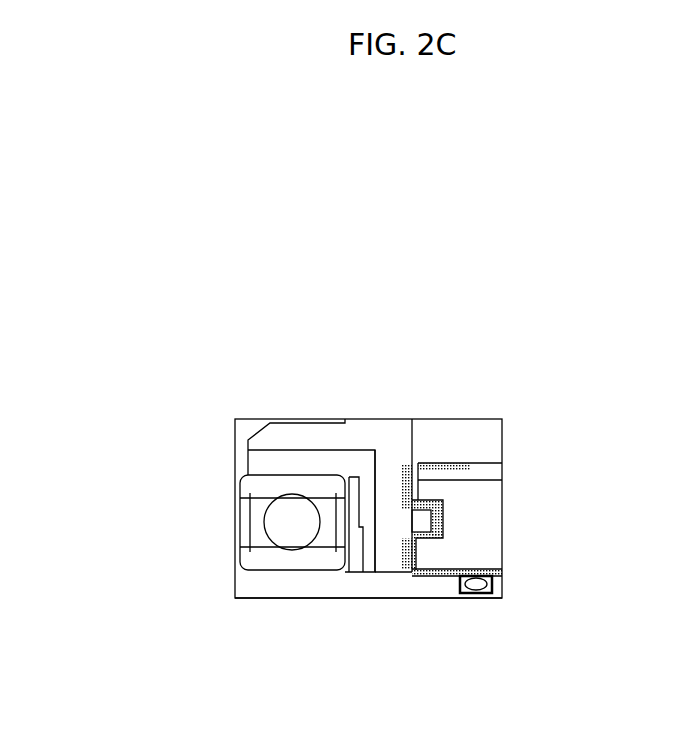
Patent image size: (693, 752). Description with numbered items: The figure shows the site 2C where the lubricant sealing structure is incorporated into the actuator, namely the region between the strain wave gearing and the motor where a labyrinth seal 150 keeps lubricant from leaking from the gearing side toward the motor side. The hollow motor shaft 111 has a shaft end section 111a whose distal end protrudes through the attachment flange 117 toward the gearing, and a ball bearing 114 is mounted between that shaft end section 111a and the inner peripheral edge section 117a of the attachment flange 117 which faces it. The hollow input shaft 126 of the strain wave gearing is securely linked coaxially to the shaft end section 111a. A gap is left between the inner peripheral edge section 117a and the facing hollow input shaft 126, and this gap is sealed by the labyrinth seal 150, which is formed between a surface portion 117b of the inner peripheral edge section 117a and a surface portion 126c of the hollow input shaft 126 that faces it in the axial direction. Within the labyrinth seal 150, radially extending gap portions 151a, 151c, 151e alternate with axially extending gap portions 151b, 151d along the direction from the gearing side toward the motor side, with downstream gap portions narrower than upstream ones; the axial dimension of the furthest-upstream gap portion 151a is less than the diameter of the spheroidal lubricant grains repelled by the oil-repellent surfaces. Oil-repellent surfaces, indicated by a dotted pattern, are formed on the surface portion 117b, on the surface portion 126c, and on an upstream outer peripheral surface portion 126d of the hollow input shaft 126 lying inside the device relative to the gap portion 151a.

The site 2C is at (266, 410).
The hollow motor shaft 111 is at (263, 598).
The shaft end section 111a is at (335, 591).
The ball bearing 114 is at (228, 512).
The attachment flange 117 is at (383, 410).
The inner peripheral edge section 117a is at (383, 463).
The surface portion 117b is at (430, 465).
The hollow input shaft 126 is at (480, 481).
The surface portion 126c is at (434, 506).
The outer peripheral surface portion 126d is at (453, 462).
The labyrinth seal 150 is at (534, 538).
The gap portion 151a is at (502, 480).
The gap portion 151b is at (420, 497).
The gap portion 151c is at (438, 517).
The gap portion 151d is at (422, 539).
The gap portion 151e is at (420, 558).